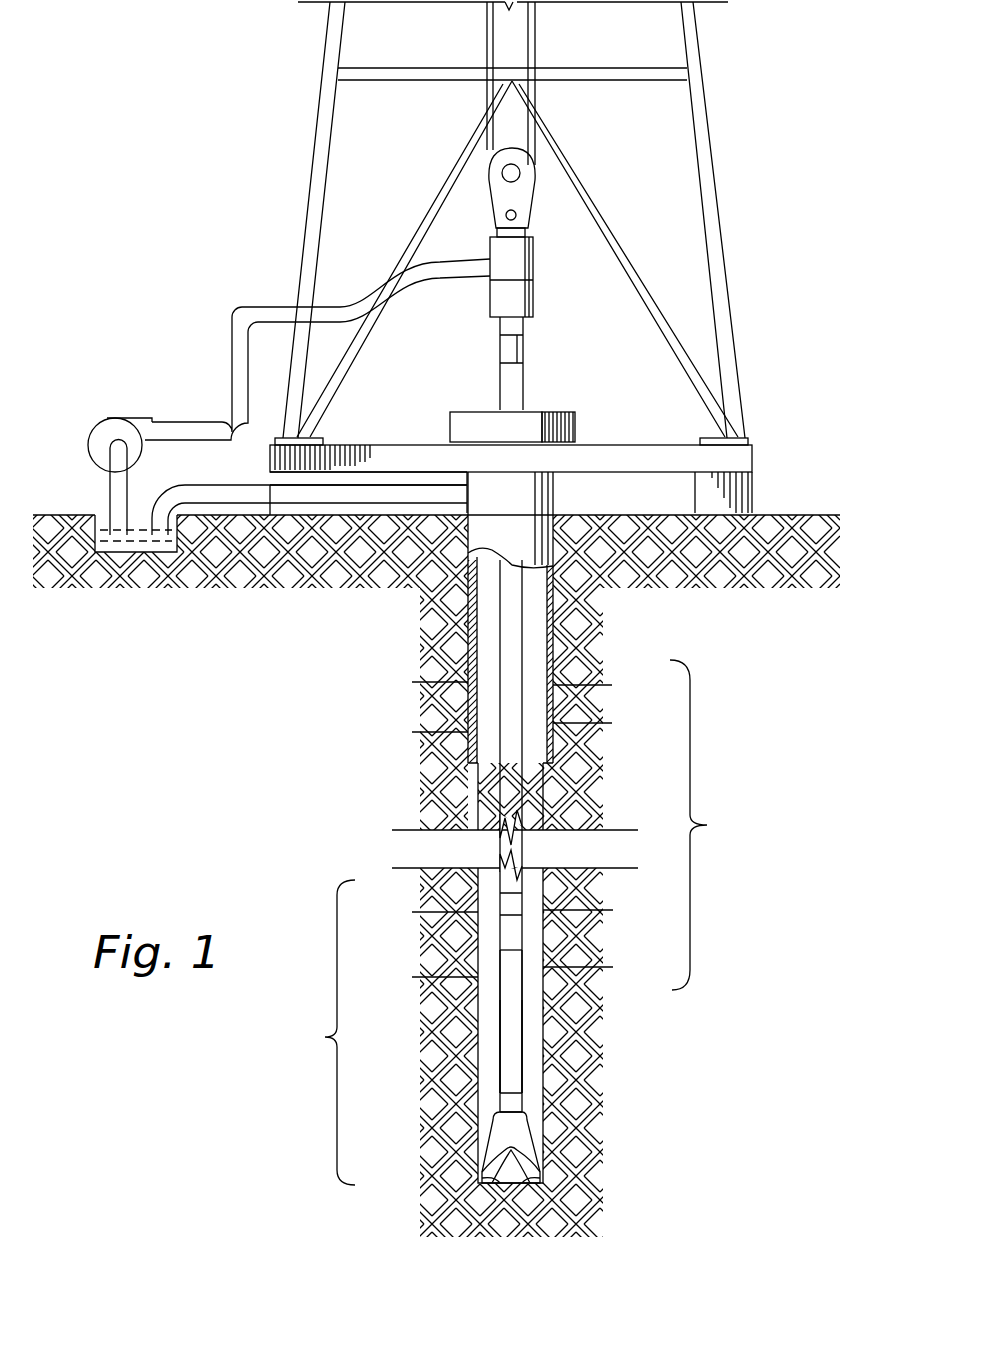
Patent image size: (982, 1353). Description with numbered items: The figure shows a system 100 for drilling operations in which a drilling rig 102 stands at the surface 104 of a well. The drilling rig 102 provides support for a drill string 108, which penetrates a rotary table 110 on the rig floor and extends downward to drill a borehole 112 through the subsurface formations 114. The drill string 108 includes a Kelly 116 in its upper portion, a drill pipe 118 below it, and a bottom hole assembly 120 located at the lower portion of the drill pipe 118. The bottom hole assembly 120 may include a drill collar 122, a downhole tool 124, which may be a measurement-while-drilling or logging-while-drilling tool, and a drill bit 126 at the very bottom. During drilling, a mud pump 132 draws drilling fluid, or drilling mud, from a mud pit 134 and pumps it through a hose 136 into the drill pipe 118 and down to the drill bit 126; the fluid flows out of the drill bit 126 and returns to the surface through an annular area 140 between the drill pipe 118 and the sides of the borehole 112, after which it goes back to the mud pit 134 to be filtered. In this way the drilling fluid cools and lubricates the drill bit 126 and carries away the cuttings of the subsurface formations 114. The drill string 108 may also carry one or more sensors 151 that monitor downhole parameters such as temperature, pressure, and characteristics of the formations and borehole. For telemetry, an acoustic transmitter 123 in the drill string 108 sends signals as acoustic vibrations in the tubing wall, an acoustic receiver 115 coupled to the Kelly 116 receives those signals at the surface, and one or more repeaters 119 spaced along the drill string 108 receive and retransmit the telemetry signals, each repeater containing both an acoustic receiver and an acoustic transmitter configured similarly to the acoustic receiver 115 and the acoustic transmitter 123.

The system 100 is at (208, 130).
The drilling rig 102 is at (712, 140).
The surface 104 is at (785, 513).
The drill string 108 is at (533, 631).
The rotary table 110 is at (450, 430).
The borehole 112 is at (472, 652).
The subsurface formations 114 is at (711, 825).
The acoustic receiver 115 is at (523, 328).
The Kelly 116 is at (500, 350).
The drill pipe 118 is at (512, 793).
The repeaters 119 is at (510, 903).
The bottom hole assembly 120 is at (316, 1032).
The drill collar 122 is at (463, 665).
The acoustic transmitter 123 is at (510, 1050).
The downhole tool 124 is at (507, 937).
The drill bit 126 is at (500, 1143).
The mud pump 132 is at (118, 418).
The mud pit 134 is at (138, 548).
The hose 136 is at (232, 370).
The annular area 140 is at (530, 1093).
The sensors 151 is at (512, 1020).